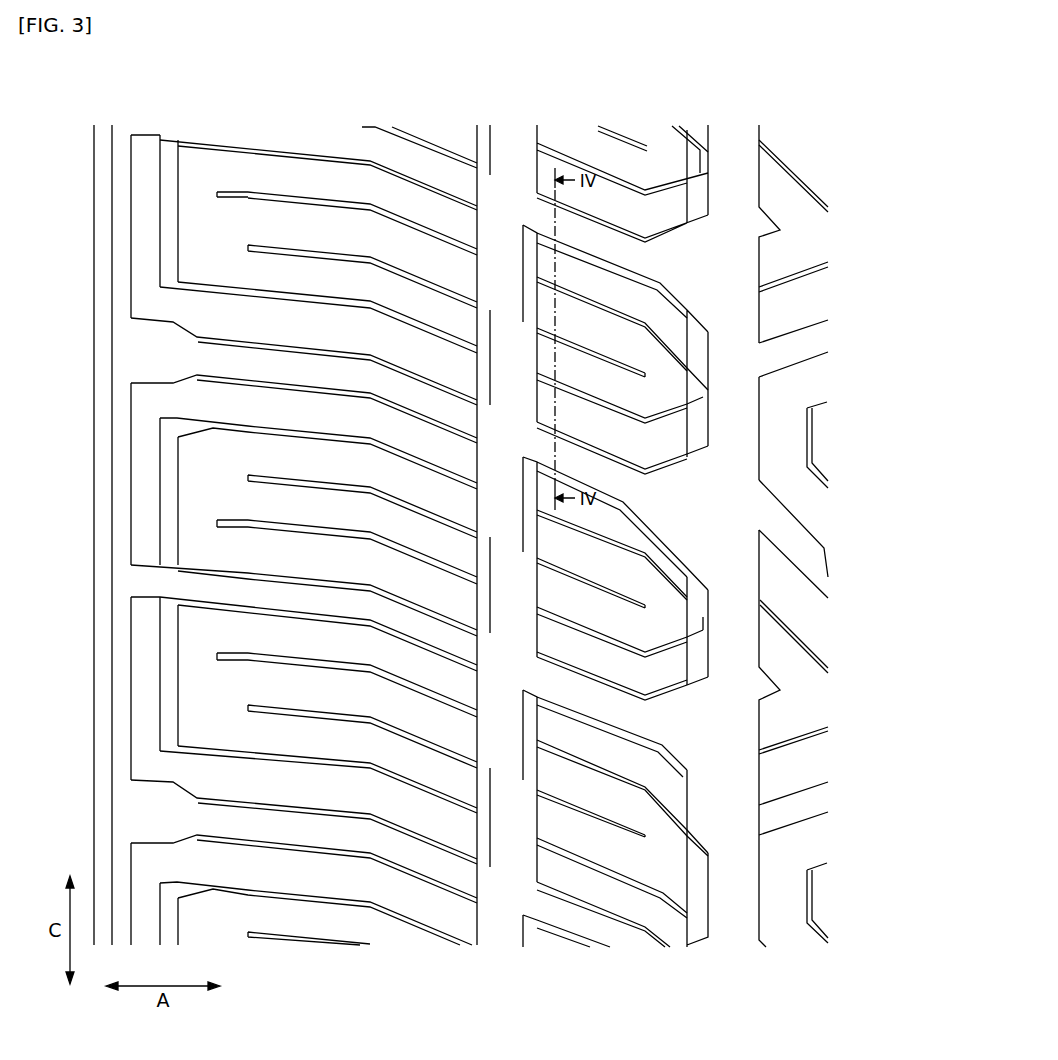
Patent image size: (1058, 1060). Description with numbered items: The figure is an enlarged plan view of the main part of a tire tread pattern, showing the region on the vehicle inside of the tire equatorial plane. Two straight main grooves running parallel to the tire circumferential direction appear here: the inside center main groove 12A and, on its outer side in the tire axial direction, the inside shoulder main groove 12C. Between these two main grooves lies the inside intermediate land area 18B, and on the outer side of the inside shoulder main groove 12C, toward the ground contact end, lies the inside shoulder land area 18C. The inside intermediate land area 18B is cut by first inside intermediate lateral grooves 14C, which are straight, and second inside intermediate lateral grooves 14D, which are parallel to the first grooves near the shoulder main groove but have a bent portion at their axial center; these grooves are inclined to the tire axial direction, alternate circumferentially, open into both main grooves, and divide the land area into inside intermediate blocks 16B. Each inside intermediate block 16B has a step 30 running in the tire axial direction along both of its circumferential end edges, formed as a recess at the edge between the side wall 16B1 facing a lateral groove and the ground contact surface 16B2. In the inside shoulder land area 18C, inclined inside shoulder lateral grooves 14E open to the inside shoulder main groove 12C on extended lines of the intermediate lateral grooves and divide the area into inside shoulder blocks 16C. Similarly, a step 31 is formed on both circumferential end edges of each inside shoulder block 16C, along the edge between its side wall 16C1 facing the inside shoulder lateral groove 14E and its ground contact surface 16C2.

The inside center main groove 12A is at (735, 159).
The inside shoulder main groove 12C is at (515, 145).
The first inside intermediate lateral groove 14C is at (630, 253).
The second inside intermediate lateral groove 14D is at (690, 513).
The inside shoulder lateral groove 14E is at (257, 365).
The inside intermediate block 16B is at (618, 343).
The side wall 16B1 is at (570, 442).
The ground contact surface 16B2 is at (672, 808).
The inside shoulder block 16C is at (198, 232).
The side wall 16C1 is at (436, 385).
The ground contact surface 16C2 is at (320, 650).
The inside intermediate land area 18B is at (655, 135).
The inside shoulder land area 18C is at (322, 137).
The step 30 is at (627, 458).
The step 31 is at (400, 362).